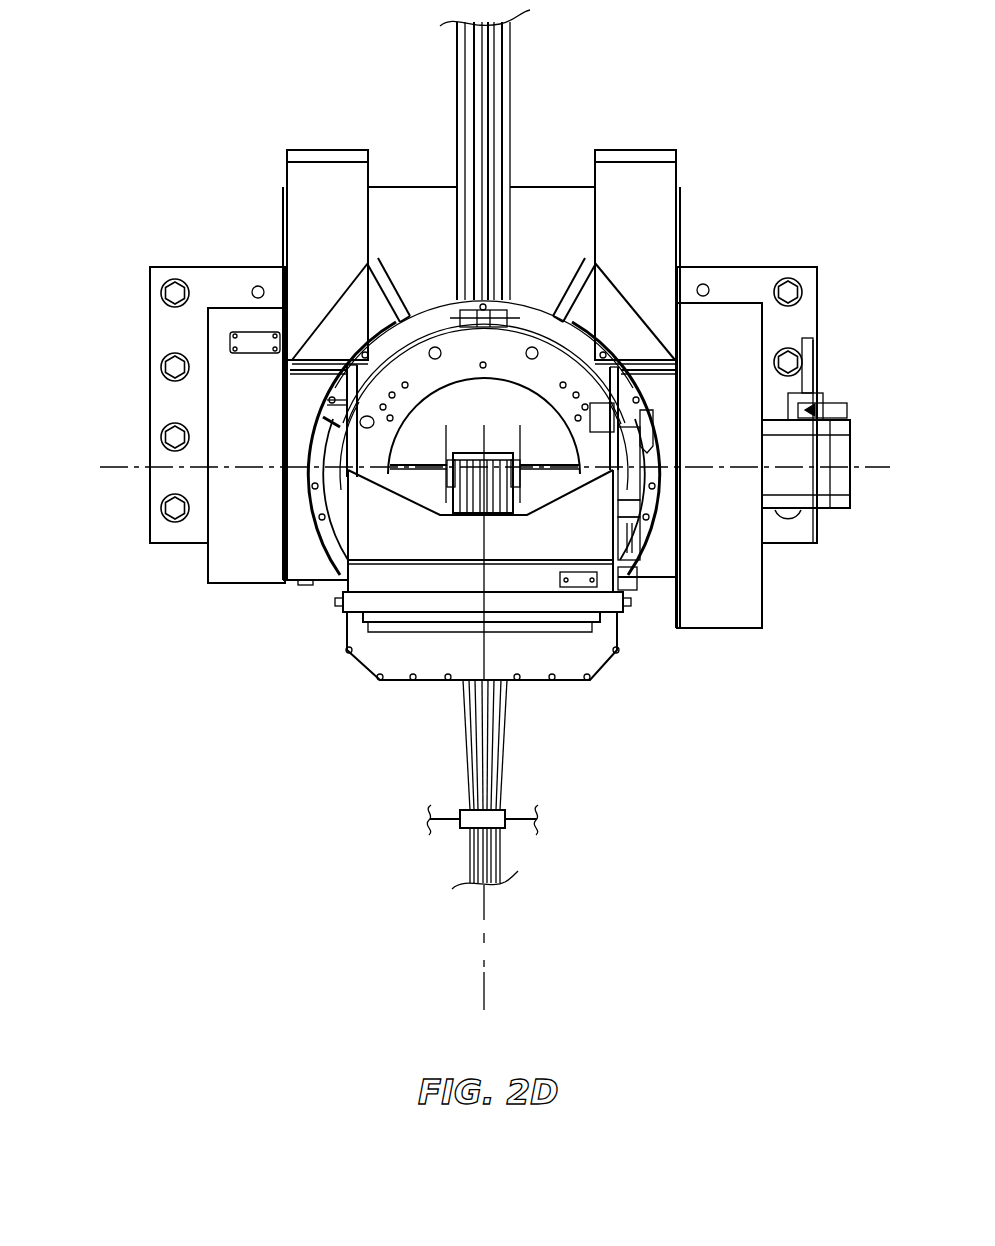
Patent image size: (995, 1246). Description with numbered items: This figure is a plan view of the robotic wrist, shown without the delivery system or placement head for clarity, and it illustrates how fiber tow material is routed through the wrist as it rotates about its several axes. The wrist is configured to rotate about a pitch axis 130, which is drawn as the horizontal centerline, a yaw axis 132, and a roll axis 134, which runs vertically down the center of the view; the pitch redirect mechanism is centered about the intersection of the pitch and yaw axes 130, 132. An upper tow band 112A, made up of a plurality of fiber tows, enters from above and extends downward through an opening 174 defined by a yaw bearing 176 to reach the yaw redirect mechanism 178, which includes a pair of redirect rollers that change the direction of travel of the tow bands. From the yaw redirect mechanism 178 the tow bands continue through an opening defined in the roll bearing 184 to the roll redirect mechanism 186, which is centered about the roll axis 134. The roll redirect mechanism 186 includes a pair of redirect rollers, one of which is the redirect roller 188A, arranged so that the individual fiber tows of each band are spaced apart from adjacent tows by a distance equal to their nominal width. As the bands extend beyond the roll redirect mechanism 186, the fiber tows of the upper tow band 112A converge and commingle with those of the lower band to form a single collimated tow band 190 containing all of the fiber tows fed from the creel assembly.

The upper tow band 112A is at (510, 97).
The yaw bearing 176 is at (400, 332).
The yaw redirect mechanism 178 is at (460, 426).
The yaw axis 132 is at (488, 462).
The opening 174 is at (504, 413).
The pitch axis 130 is at (133, 468).
The roll bearing 184 is at (338, 603).
The redirect roller 188A is at (465, 808).
The roll redirect mechanism 186 is at (499, 784).
The single collimated tow band 190 is at (500, 855).
The roll axis 134 is at (487, 943).